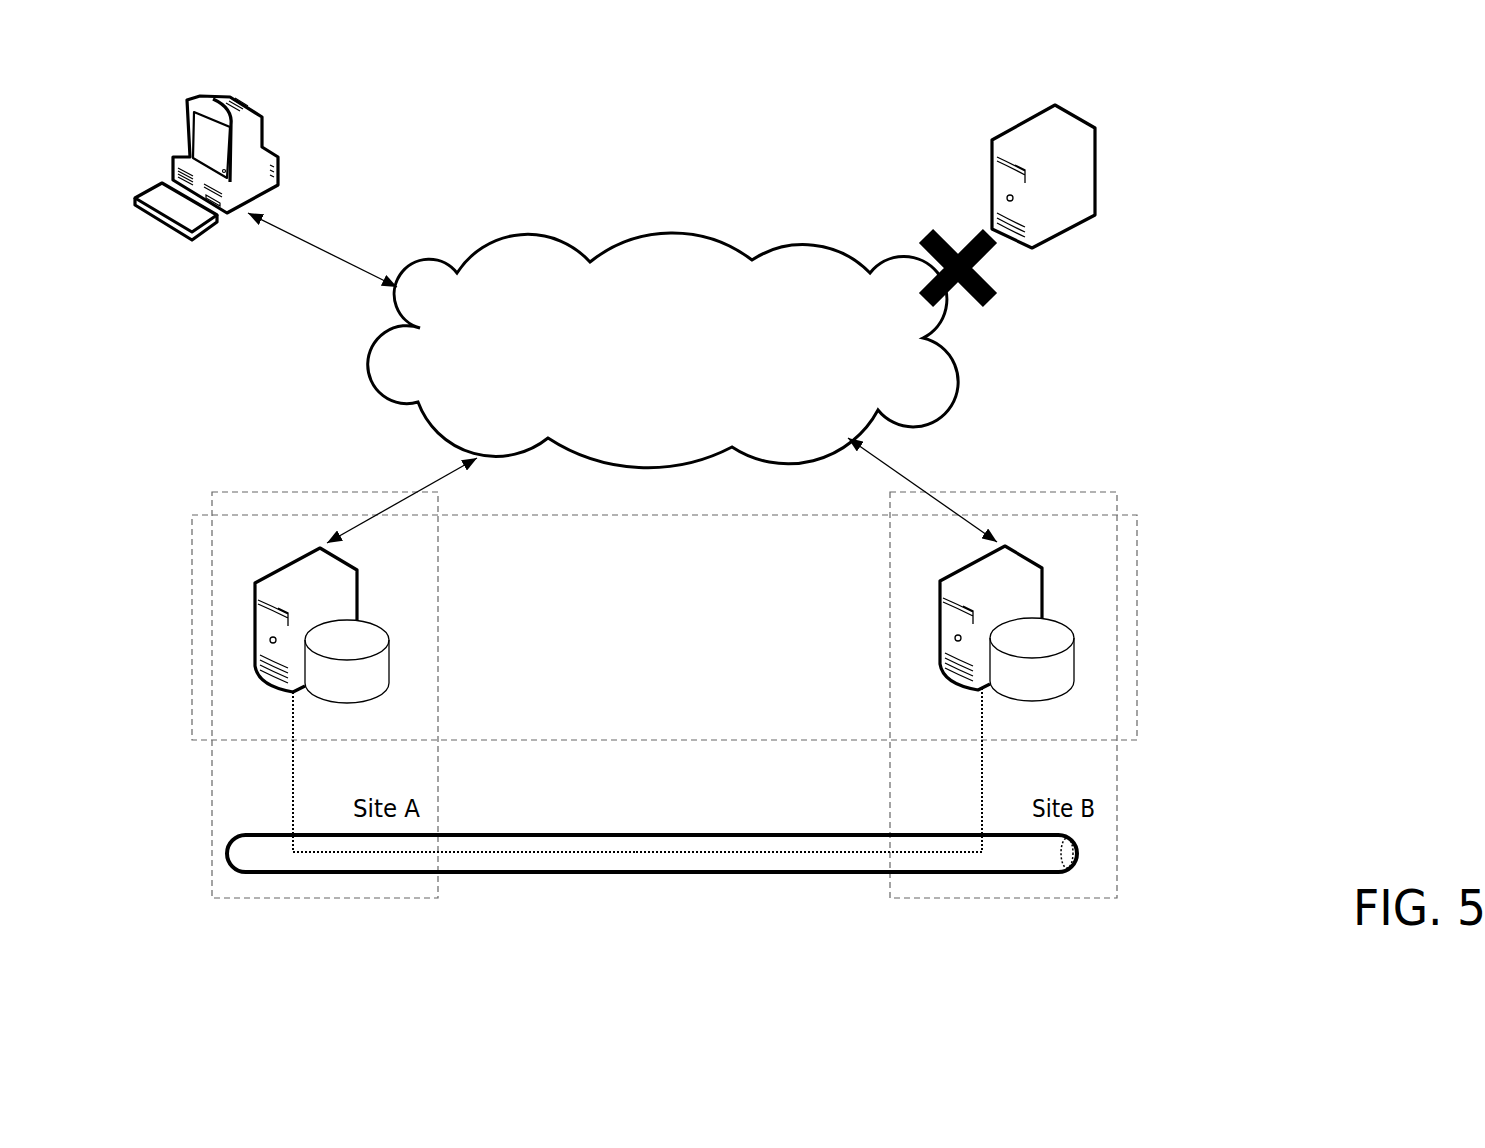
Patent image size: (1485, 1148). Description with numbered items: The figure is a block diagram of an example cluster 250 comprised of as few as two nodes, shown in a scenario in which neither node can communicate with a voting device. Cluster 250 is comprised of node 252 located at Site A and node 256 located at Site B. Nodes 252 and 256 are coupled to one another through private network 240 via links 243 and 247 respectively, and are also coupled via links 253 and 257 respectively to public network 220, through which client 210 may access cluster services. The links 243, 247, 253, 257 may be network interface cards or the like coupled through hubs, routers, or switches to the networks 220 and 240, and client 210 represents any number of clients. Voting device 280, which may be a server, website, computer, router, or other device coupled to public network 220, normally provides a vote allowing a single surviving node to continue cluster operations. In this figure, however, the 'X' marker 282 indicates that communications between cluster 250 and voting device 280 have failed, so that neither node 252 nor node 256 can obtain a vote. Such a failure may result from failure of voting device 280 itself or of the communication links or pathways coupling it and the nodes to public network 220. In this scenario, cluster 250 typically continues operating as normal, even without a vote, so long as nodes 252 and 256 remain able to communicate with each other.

The client 210 is at (262, 117).
The public network 220 is at (663, 350).
The private network 240 is at (1075, 852).
The link 243 is at (454, 772).
The link 247 is at (820, 770).
The cluster 250 is at (1144, 515).
The node 252 is at (255, 585).
The link 253 is at (347, 530).
The node 256 is at (1043, 567).
The link 257 is at (977, 527).
The voting device 280 is at (1097, 175).
The blocked connection indicator 282 is at (988, 298).